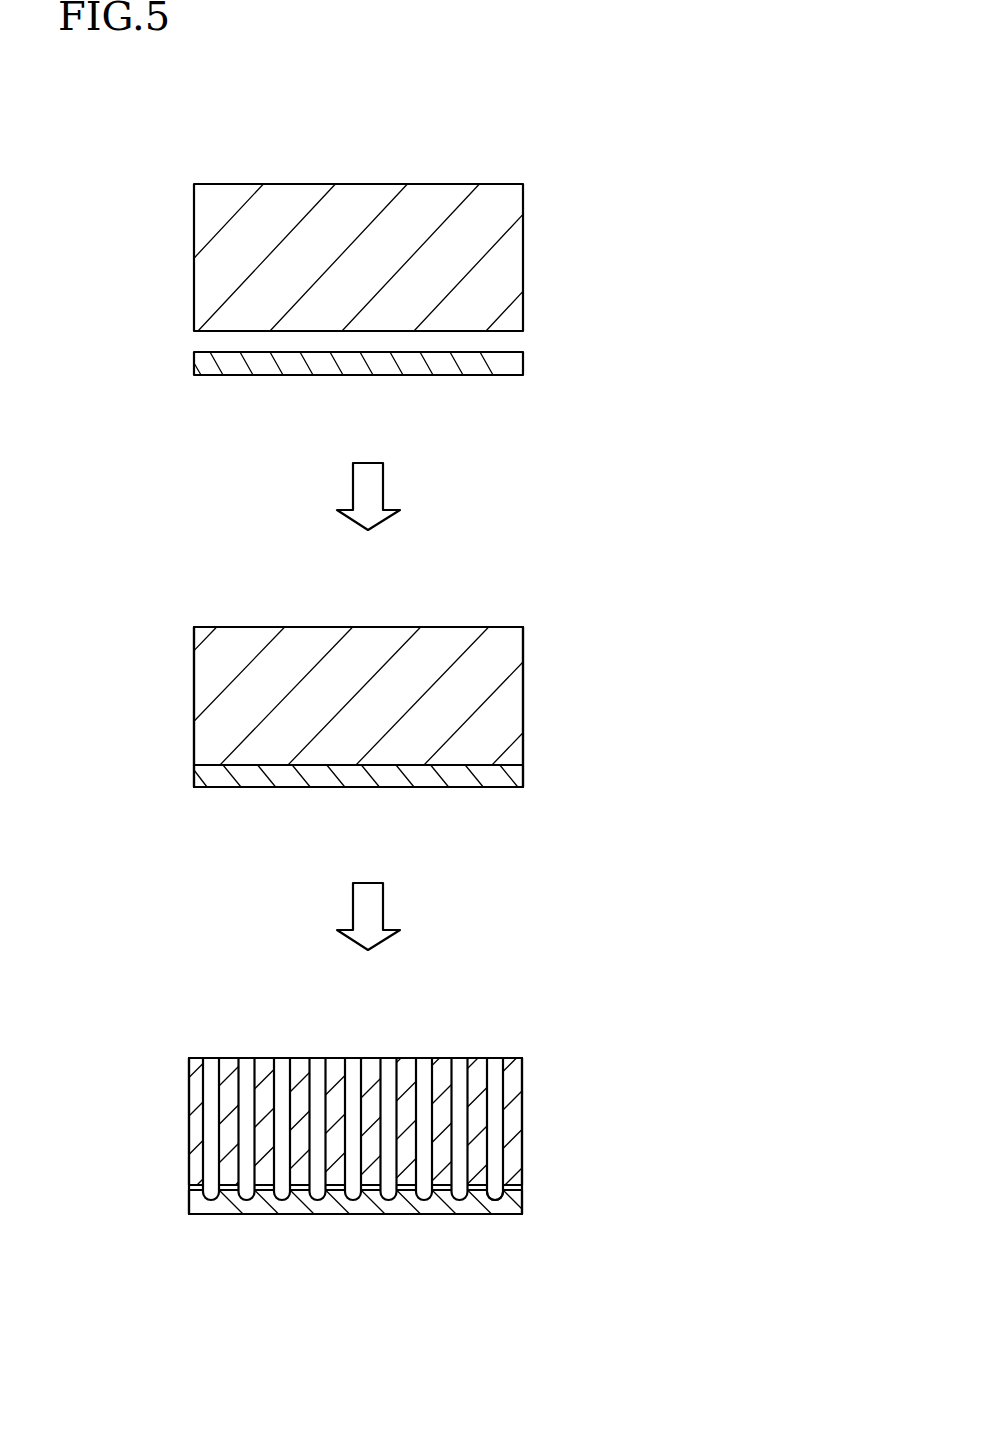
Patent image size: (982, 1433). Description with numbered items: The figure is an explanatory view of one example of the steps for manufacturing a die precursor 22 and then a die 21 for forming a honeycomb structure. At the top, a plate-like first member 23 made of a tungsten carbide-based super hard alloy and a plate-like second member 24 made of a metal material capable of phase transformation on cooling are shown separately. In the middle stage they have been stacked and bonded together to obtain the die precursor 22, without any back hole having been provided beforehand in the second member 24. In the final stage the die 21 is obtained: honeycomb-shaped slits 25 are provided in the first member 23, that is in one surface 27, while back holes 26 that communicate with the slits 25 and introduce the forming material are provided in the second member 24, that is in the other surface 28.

The die for forming a honeycomb structure 21 is at (560, 1064).
The die precursor 22 is at (556, 624).
The first member 23 is at (517, 362).
The second member 24 is at (507, 258).
The slits 25 is at (495, 1200).
The back holes 26 is at (493, 1148).
The one surface 27 is at (437, 1260).
The other surface 28 is at (470, 1031).